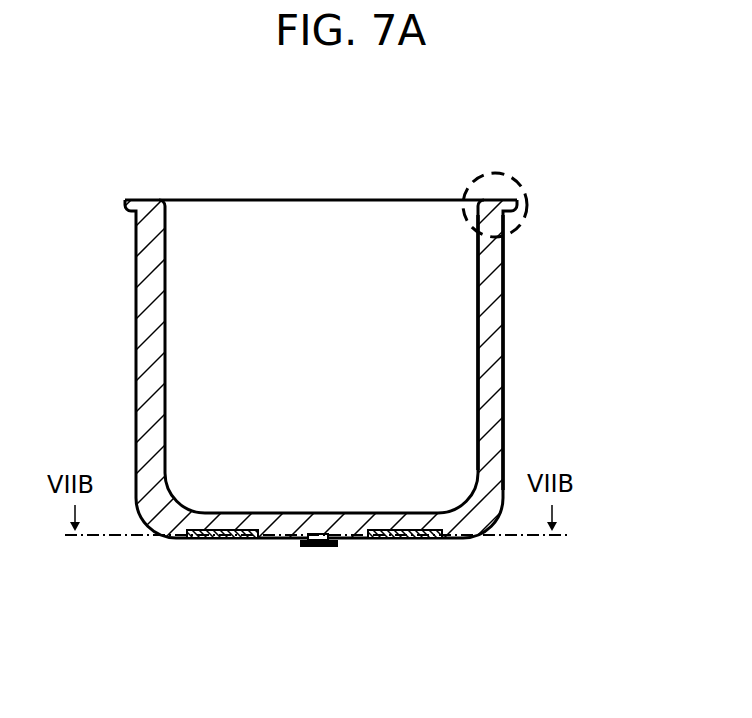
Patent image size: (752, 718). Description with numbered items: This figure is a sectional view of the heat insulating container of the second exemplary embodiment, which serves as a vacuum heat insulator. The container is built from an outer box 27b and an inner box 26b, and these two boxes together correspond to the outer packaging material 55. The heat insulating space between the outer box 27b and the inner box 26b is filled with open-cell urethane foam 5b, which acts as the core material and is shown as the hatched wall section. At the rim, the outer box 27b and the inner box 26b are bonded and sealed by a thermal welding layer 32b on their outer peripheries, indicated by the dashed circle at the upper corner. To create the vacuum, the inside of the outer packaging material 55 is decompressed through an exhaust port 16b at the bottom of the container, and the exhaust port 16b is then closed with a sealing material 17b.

The open-cell urethane foam 5b is at (153, 305).
The thermal welding layer 32b is at (512, 202).
The outer box 27b is at (505, 265).
The inner box 26b is at (482, 273).
The outer packaging material 55 is at (652, 225).
The exhaust port 16b is at (318, 533).
The sealing material 17b is at (327, 547).